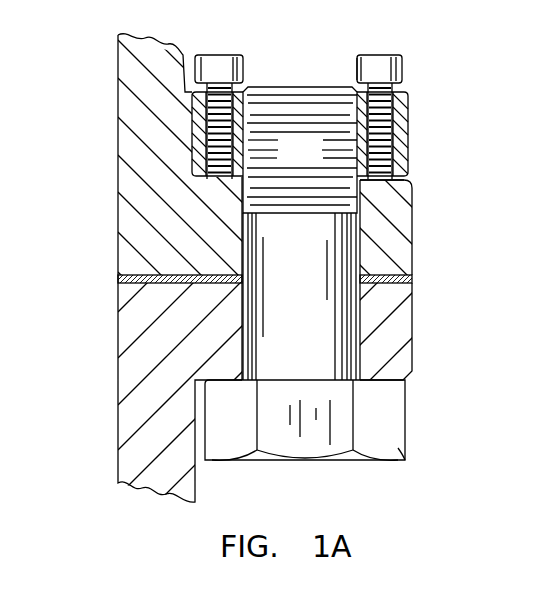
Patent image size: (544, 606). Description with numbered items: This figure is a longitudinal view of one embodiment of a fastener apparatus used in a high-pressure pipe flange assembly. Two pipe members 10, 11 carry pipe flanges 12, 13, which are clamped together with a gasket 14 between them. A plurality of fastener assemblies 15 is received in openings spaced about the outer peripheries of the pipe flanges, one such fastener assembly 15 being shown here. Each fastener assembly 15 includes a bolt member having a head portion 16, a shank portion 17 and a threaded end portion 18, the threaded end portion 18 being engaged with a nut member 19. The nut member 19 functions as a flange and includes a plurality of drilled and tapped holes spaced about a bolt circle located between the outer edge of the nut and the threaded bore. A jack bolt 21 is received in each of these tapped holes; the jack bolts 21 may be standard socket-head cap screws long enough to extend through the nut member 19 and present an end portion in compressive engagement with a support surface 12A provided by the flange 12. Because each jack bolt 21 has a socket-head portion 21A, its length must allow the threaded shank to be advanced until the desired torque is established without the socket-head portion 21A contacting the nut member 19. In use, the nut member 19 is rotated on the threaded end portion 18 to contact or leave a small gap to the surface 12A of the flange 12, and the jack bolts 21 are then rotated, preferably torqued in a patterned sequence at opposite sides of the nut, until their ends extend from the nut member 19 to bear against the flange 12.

The pipe member 10 is at (118, 155).
The pipe member 11 is at (118, 318).
The pipe flange 12 is at (412, 223).
The support surface 12A is at (407, 178).
The pipe flange 13 is at (412, 320).
The gasket 14 is at (412, 278).
The fastener assembly 15 is at (407, 452).
The head portion 16 is at (282, 462).
The shank portion 17 is at (312, 334).
The threaded end portion 18 is at (308, 166).
The nut member 19 is at (408, 105).
The jack bolt 21 is at (404, 63).
The socket-head portion 21A is at (357, 63).